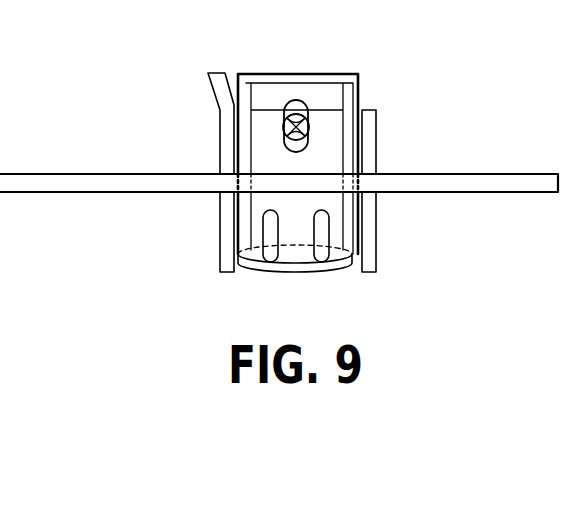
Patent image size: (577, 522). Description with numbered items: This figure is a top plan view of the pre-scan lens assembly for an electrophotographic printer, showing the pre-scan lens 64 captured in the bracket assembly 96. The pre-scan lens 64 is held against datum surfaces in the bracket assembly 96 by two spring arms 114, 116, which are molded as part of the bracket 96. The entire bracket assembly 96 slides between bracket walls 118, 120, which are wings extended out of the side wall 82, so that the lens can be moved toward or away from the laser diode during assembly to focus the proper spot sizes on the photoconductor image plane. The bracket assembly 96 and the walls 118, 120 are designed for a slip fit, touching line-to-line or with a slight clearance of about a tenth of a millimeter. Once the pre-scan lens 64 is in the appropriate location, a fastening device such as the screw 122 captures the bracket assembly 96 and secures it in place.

The bracket assembly 96 is at (386, 96).
The side wall 82 is at (170, 184).
The bracket wall 120 is at (227, 137).
The bracket wall 118 is at (367, 152).
The screw 122 is at (299, 101).
The pre-scan lens 64 is at (298, 262).
The spring arm 116 is at (266, 245).
The spring arm 114 is at (334, 248).